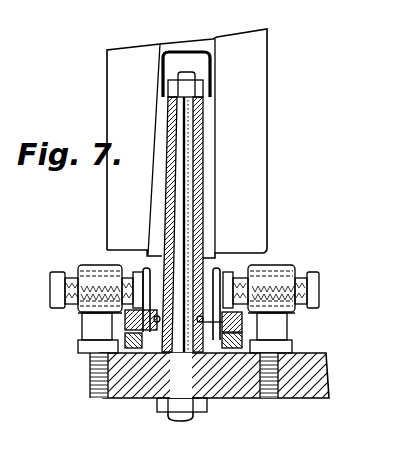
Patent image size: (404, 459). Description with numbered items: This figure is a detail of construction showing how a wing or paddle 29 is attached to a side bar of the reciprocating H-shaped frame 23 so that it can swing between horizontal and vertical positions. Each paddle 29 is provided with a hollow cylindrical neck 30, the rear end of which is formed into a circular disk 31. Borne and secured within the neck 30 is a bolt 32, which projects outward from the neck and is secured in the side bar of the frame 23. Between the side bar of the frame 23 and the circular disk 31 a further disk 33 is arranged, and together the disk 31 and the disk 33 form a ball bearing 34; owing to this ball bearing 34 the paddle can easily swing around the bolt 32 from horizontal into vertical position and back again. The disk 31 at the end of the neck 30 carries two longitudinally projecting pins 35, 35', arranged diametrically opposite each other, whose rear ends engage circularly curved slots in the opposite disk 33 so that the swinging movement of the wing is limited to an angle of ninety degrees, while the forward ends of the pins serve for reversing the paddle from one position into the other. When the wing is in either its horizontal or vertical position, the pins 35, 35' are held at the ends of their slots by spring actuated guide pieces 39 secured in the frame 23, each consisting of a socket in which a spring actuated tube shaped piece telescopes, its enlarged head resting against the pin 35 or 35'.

The reciprocating H-shaped frame 23 is at (312, 375).
The wing or paddle 29 is at (115, 66).
The hollow cylindrical neck 30 is at (200, 133).
The circular disk 31 is at (250, 295).
The bolt 32 is at (183, 198).
The disk 33 is at (253, 325).
The ball bearing 34 is at (110, 322).
The longitudinally projecting pin 35 is at (264, 268).
The longitudinally projecting pin 35' is at (89, 281).
The spring actuated guide piece 39 is at (188, 290).